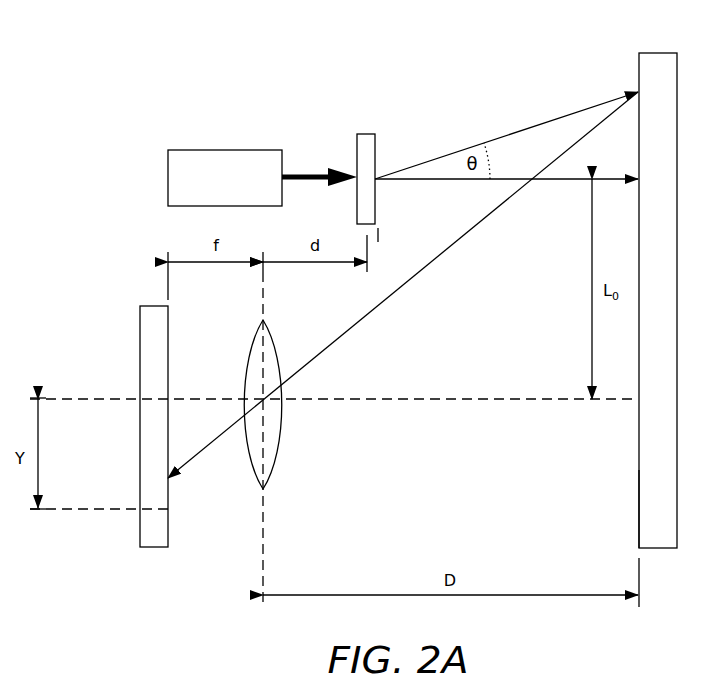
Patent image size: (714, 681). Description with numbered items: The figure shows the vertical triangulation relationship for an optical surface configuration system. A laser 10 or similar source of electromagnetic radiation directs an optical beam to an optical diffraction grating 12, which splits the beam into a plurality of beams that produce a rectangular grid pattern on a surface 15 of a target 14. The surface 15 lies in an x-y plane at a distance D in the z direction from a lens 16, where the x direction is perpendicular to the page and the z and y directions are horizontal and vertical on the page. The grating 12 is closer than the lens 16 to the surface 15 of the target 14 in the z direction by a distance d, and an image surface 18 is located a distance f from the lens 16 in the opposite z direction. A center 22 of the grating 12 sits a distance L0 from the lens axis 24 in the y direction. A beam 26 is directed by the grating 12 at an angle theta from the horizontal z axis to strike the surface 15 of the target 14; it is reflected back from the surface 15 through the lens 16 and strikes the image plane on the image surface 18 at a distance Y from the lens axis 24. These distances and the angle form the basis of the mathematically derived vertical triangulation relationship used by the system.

The laser 10 is at (225, 150).
The optical diffraction grating 12 is at (365, 134).
The target 14 is at (658, 53).
The surface 15 is at (639, 508).
The lens 16 is at (278, 465).
The image surface 18 is at (155, 547).
The center 22 is at (570, 182).
The lens axis 24 is at (421, 399).
The beam 26 is at (572, 112).